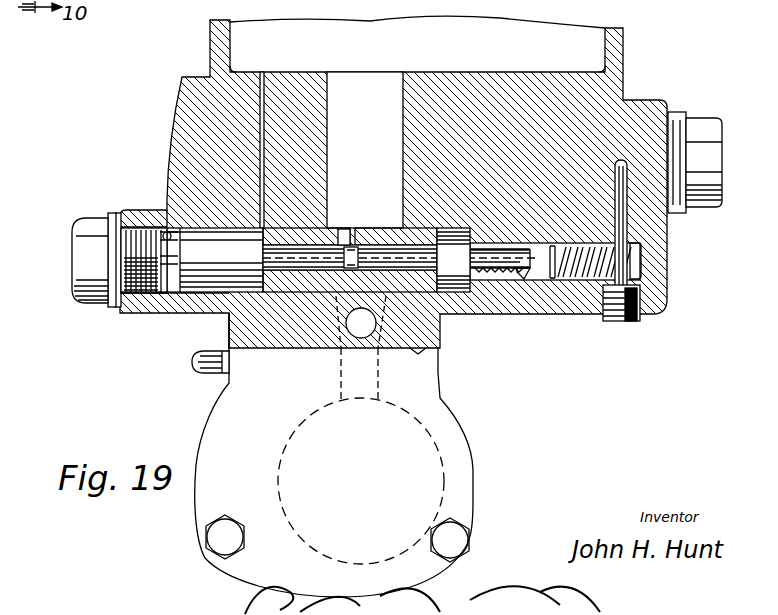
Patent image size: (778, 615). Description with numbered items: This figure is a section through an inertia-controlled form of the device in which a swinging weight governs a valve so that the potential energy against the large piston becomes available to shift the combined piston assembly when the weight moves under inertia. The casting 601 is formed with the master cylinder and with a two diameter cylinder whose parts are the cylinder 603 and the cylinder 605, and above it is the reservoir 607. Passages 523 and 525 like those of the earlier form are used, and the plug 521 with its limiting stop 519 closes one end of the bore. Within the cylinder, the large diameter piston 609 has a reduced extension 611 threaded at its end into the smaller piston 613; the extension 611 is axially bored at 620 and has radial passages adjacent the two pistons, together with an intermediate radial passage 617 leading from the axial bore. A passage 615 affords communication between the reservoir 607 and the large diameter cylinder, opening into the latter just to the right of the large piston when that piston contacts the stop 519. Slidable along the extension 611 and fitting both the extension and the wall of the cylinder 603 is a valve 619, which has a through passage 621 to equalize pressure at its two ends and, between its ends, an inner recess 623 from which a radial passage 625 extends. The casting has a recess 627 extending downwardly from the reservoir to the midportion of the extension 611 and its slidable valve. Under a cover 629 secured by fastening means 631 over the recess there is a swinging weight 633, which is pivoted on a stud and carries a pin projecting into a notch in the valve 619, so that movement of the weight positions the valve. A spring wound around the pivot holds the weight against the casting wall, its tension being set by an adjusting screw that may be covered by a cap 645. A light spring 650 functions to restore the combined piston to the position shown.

The casting 601 is at (655, 298).
The reservoir 607 is at (592, 30).
The recess 627 is at (352, 82).
The passage 615 is at (266, 82).
The large diameter piston 609 is at (188, 232).
The through passage 621 is at (322, 262).
The intermediate radial passage 617 is at (352, 272).
The reduced extension 611 is at (340, 244).
The smaller piston 613 is at (523, 263).
The inner recess 623 is at (337, 244).
The radial passage 625 is at (352, 246).
The cylinder part 605 is at (560, 270).
The passage 525 is at (623, 204).
The light spring 650 is at (583, 263).
The passage 523 is at (165, 212).
The limiting stop 519 is at (133, 218).
The plug 521 is at (88, 256).
The cylinder part 603 is at (172, 295).
The axial bore 620 is at (230, 316).
The cover 629 is at (228, 435).
The valve 619 is at (380, 355).
The swinging weight 633 is at (433, 437).
The cap 645 is at (200, 360).
The fastening means 631 is at (228, 372).